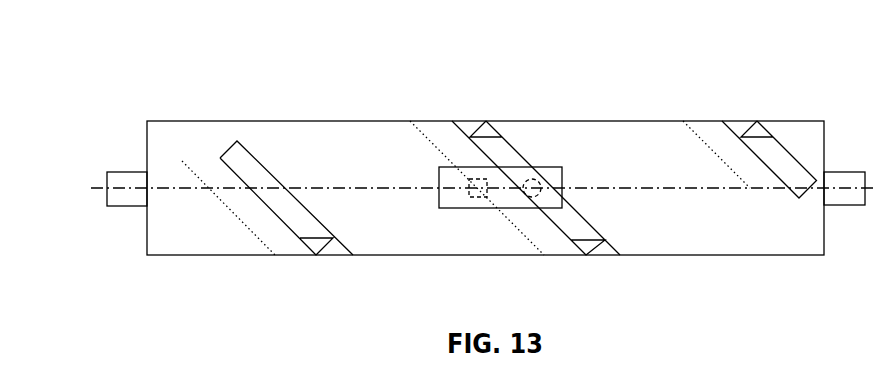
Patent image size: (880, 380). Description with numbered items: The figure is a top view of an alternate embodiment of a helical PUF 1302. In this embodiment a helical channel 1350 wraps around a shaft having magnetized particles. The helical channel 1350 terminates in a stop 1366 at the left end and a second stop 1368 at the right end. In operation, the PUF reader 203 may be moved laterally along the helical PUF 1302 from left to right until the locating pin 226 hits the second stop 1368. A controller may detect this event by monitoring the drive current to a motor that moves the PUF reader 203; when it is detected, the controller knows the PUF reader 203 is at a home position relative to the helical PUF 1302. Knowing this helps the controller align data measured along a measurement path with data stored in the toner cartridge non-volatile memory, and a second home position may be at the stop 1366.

The helical PUF 1302 is at (127, 53).
The stop 1366 is at (225, 157).
The helical channel 1350 is at (471, 116).
The second stop 1368 is at (806, 197).
The PUF reader 203 is at (440, 167).
The locating pin 226 is at (534, 194).